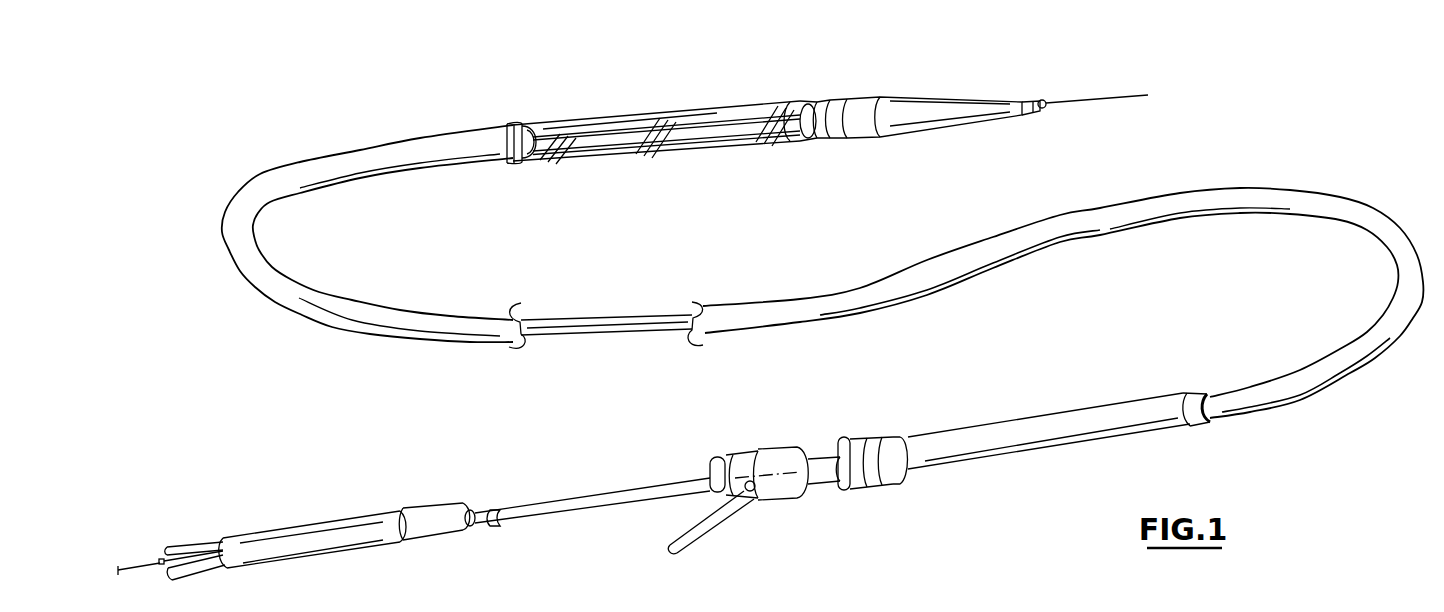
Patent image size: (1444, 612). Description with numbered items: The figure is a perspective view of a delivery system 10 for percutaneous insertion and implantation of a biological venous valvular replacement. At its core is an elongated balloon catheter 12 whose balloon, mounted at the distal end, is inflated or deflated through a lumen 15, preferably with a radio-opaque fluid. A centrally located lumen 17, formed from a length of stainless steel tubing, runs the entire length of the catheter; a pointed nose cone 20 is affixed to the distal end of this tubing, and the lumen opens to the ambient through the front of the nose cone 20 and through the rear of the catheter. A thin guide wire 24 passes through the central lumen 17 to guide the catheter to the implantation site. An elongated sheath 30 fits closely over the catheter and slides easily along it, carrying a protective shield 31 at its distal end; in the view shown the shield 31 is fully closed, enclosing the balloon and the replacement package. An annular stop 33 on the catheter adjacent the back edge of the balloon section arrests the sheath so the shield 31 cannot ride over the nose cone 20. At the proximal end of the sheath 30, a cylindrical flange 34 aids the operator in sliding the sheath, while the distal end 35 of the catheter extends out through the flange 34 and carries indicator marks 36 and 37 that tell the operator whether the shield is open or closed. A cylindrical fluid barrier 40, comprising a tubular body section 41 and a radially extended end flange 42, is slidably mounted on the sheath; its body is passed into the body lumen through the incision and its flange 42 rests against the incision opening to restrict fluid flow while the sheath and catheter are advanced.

The system 10 is at (634, 115).
The balloon catheter 12 is at (450, 504).
The lumen 15 is at (191, 550).
The central lumen 17 is at (1044, 100).
The nose cone 20 is at (927, 86).
The guide wire 24 is at (1133, 95).
The sheath 30 is at (300, 281).
The protective shield 31 is at (708, 152).
The annular stop 33 is at (525, 160).
The cylindrical flange 34 is at (753, 450).
The distal end of the catheter 35 is at (542, 507).
The indicator mark 36 is at (498, 527).
The indicator mark 37 is at (690, 492).
The cylindrical fluid barrier 40 is at (970, 416).
The tubular body section 41 is at (1130, 413).
The end flange 42 is at (887, 473).